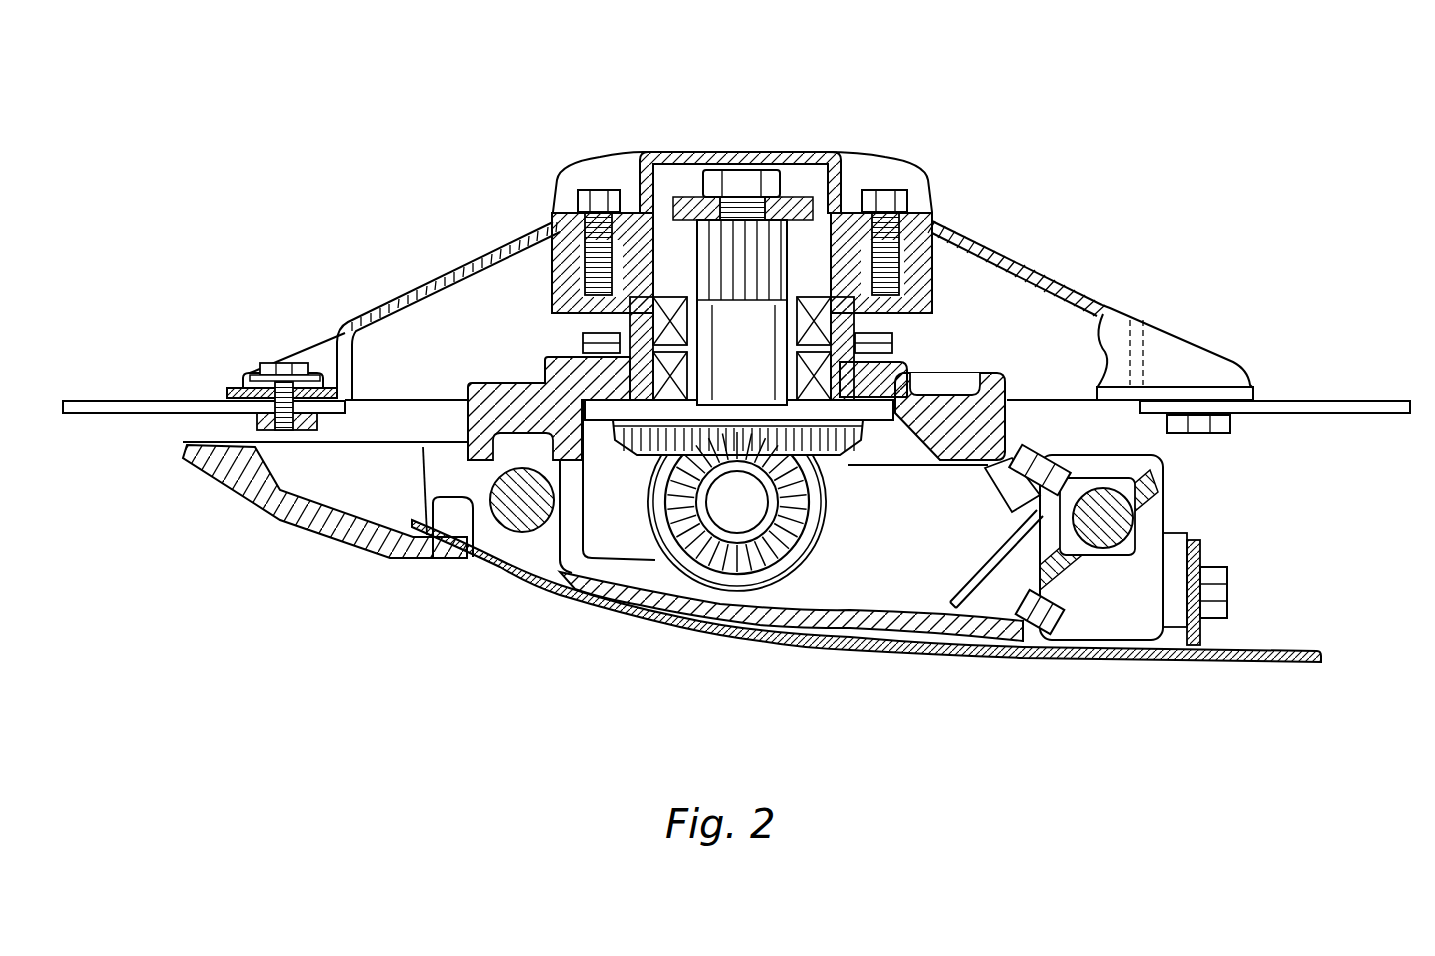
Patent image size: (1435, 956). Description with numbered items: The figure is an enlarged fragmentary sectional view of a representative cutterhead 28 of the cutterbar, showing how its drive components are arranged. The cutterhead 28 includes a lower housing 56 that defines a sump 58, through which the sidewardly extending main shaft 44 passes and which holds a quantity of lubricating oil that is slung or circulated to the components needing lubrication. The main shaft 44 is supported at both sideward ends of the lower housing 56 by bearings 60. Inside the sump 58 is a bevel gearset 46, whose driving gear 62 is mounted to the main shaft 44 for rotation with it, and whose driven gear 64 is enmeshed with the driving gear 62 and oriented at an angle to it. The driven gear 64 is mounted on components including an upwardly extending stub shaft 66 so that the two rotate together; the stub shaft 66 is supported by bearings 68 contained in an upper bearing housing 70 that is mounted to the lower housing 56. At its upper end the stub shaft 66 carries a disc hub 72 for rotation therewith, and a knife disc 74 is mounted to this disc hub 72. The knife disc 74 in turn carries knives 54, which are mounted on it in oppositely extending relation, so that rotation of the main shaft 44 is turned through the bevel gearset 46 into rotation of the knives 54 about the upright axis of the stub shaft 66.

The cutterhead 28 is at (1080, 188).
The main shaft 44 is at (609, 530).
The bevel gearset 46 is at (752, 548).
The knives 54 is at (121, 400).
The lower housing 56 is at (497, 565).
The sump 58 is at (573, 592).
The bearings 60 is at (828, 556).
The driving gear 62 is at (710, 525).
The driven gear 64 is at (845, 456).
The stub shaft 66 is at (800, 200).
The bearings 68 is at (650, 382).
The upper bearing housing 70 is at (865, 322).
The disc hub 72 is at (935, 265).
The knife disc 74 is at (1053, 277).